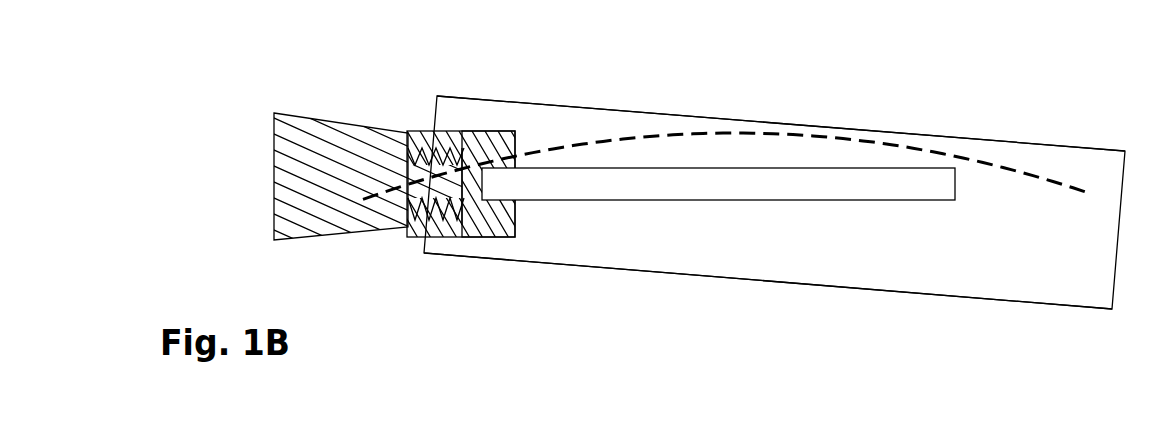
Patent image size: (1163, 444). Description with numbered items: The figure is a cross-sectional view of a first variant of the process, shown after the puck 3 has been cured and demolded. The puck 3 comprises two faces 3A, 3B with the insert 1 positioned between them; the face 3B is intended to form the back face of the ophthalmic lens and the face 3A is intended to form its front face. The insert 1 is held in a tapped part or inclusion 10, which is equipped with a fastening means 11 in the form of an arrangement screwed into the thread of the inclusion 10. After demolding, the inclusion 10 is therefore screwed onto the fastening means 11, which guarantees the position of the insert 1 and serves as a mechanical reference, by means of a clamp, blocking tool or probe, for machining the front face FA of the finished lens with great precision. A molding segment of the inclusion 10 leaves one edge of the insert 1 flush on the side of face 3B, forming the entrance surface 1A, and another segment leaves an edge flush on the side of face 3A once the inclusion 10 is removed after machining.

The insert 1 is at (913, 188).
The entrance surface 1A is at (487, 223).
The puck 3 is at (893, 297).
The face of the puck 3A is at (530, 103).
The face of the puck 3B is at (635, 273).
The inclusion 10 is at (455, 230).
The fastening means 11 is at (303, 188).
The front face FA is at (633, 135).